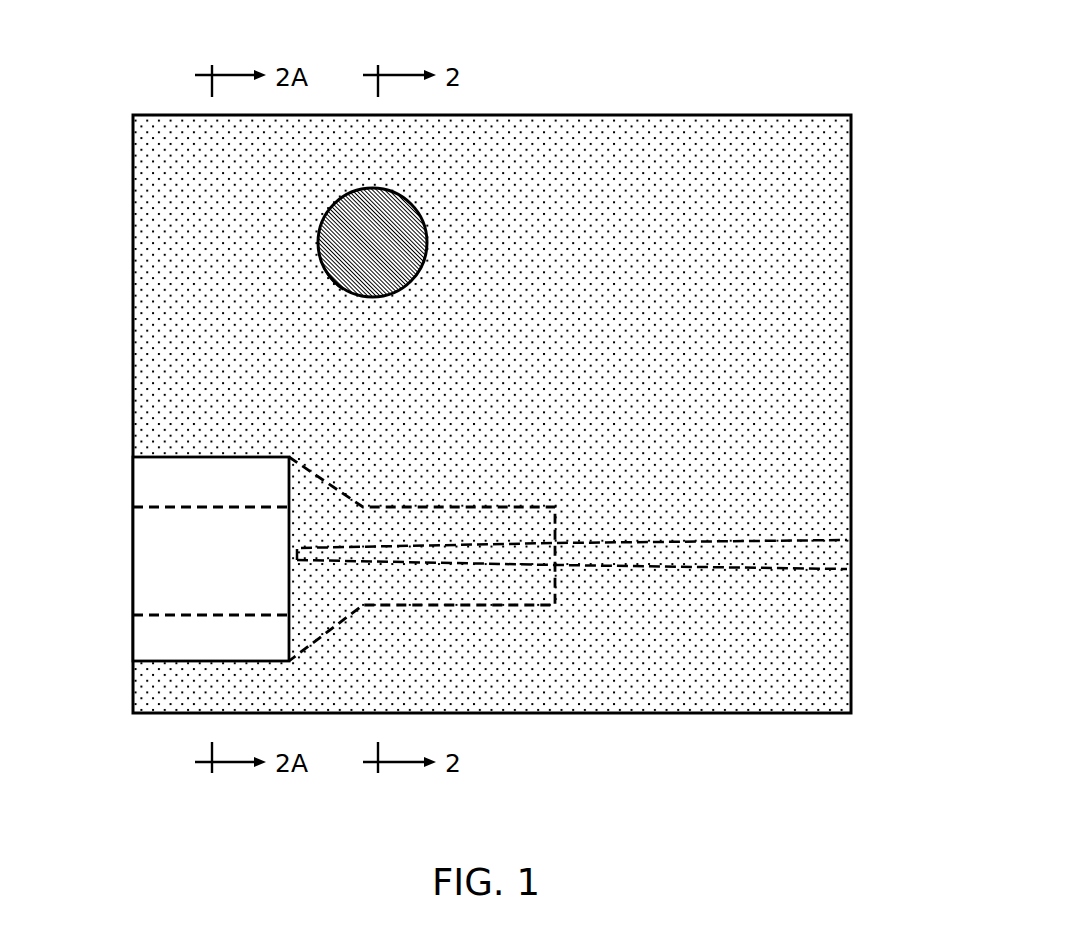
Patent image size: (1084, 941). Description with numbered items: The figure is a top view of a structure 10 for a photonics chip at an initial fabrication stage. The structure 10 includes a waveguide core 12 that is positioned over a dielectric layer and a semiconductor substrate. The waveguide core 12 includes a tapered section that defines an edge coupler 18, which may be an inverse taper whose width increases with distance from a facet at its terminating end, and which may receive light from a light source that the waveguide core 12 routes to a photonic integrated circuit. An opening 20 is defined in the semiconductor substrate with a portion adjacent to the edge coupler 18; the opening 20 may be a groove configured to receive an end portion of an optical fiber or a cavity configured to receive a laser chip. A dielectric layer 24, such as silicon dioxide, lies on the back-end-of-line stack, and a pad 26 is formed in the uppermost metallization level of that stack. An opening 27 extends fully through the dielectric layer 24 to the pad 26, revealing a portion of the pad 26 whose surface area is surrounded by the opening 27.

The structure 10 is at (125, 42).
The waveguide core 12 is at (803, 541).
The edge coupler 18 is at (272, 549).
The opening 20 is at (201, 592).
The dielectric layer 24 is at (800, 173).
The pad 26 is at (372, 235).
The opening 27 is at (338, 283).